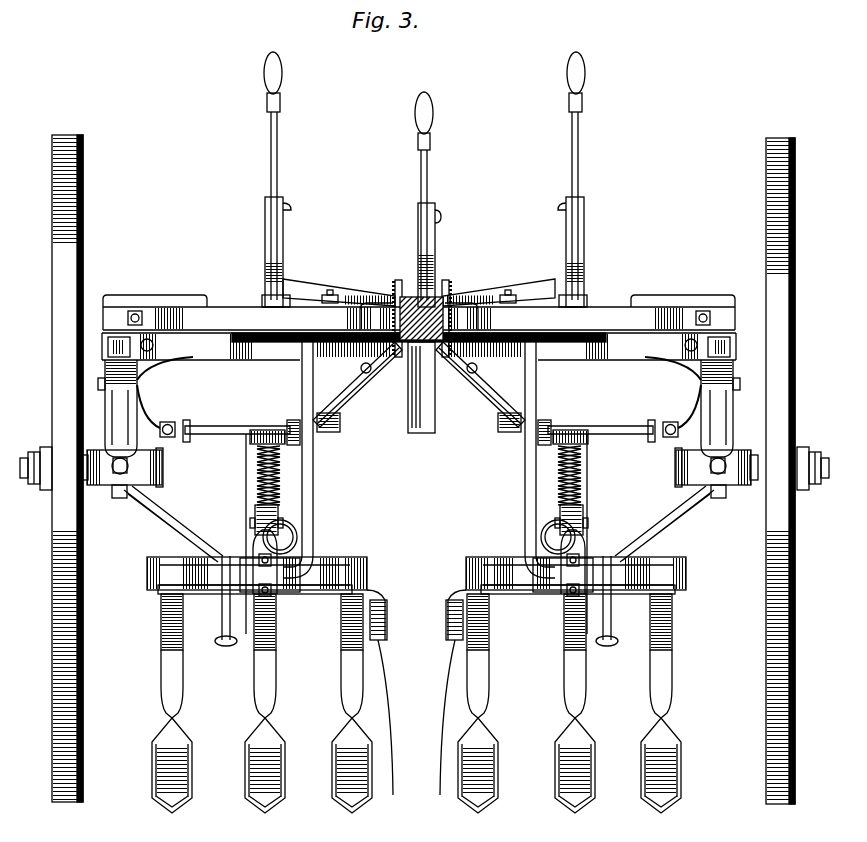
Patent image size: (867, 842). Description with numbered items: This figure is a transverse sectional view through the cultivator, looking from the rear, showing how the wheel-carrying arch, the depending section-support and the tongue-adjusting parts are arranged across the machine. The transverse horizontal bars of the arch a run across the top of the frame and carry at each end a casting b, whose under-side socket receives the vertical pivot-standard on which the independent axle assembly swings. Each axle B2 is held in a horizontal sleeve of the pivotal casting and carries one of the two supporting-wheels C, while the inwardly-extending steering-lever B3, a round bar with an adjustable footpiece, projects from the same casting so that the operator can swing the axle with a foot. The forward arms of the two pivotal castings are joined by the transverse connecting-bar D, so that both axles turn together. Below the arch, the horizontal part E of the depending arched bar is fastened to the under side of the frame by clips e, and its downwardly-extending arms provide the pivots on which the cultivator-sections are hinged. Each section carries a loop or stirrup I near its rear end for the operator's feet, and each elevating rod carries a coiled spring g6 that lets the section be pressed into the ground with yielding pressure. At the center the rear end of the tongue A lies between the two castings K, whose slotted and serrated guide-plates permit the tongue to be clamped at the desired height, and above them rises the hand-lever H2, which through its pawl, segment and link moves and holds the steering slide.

The supporting-wheels C is at (45, 448).
The casting b is at (162, 305).
The transverse connecting-bar D is at (225, 352).
The transverse horizontal bars of the arch a is at (140, 378).
The steering-lever B3 is at (192, 436).
The axle B2 is at (163, 470).
The horizontal part of the arched bar E is at (533, 464).
The coiled spring g6 is at (282, 483).
The loop or stirrup I is at (297, 536).
The clips e is at (330, 292).
The castings K is at (399, 283).
The tongue A is at (436, 292).
The hand-lever H2 is at (430, 174).